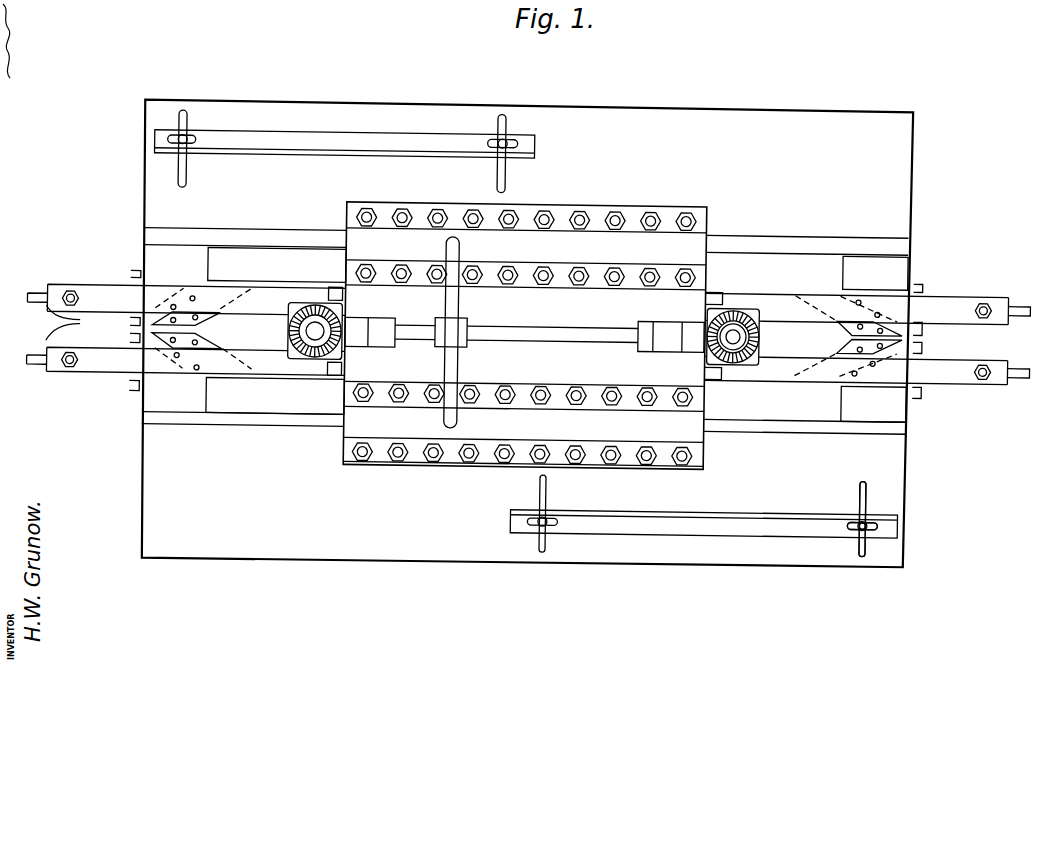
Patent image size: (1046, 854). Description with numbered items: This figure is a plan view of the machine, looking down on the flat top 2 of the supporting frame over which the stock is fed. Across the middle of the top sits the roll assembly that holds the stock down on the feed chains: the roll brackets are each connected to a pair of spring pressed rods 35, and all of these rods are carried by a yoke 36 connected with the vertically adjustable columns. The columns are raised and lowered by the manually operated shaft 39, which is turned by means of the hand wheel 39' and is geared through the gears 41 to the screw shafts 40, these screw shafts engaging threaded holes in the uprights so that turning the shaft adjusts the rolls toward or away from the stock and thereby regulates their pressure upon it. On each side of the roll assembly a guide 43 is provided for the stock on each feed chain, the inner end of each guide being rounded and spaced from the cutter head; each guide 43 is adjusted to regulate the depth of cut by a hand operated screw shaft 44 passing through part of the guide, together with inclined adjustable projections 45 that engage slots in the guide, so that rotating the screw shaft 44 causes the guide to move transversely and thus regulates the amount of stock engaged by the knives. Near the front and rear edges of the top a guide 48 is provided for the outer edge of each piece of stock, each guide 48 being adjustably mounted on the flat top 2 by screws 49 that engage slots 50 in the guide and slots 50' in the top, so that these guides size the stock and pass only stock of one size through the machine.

The flat top 2 is at (526, 333).
The spring pressed rods 35 is at (575, 266).
The yoke 36 is at (525, 336).
The manually operated shaft 39 is at (517, 326).
The hand wheel 39' is at (433, 332).
The screw shafts 40 is at (288, 333).
The gears 41 is at (346, 320).
The guide 43 is at (120, 364).
The hand operated screw shaft 44 is at (75, 323).
The inclined adjustable projections 45 is at (205, 346).
The guide 48 is at (345, 137).
The screws 49 is at (863, 524).
The slots 50 is at (872, 508).
The slots 50' is at (848, 512).